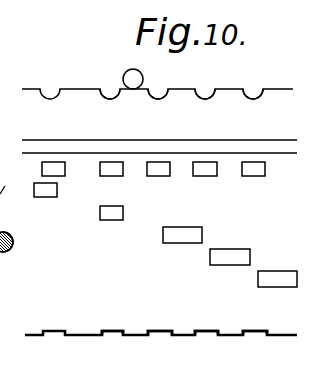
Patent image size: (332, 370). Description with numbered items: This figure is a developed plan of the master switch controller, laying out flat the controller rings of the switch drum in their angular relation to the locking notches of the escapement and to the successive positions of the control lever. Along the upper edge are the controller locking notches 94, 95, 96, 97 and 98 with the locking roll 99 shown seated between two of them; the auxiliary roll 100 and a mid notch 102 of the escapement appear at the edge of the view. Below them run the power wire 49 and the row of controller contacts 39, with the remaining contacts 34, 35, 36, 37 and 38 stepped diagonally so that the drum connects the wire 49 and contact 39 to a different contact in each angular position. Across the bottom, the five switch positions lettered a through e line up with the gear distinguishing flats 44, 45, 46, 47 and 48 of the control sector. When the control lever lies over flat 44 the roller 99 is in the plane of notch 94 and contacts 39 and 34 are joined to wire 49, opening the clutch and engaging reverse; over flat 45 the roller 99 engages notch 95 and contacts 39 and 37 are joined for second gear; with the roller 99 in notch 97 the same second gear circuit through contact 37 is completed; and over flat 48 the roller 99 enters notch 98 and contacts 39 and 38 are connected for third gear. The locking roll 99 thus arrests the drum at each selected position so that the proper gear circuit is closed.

The contact 34 is at (57, 190).
The contact 35 is at (100, 212).
The contact 36 is at (163, 234).
The contact 37 is at (210, 257).
The contact 38 is at (258, 279).
The contact 39 is at (42, 168).
The gear distinguishing flat 44 is at (55, 338).
The gear distinguishing flat 45 is at (113, 338).
The gear distinguishing flat 46 is at (161, 338).
The gear distinguishing flat 47 is at (207, 338).
The gear distinguishing flat 48 is at (255, 338).
The power wire 49 is at (30, 144).
The controller locking notch 94 is at (52, 88).
The controller locking notch 95 is at (109, 88).
The controller locking notch 96 is at (157, 87).
The controller locking notch 97 is at (203, 87).
The controller locking notch 98 is at (256, 80).
The locking roll 99 is at (132, 70).
The auxiliary roll 100 is at (10, 254).
The mid notch 102 is at (10, 231).